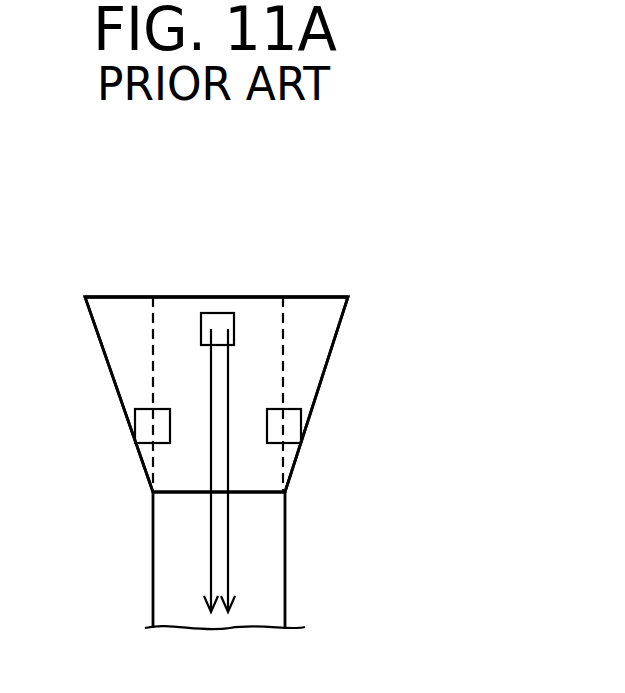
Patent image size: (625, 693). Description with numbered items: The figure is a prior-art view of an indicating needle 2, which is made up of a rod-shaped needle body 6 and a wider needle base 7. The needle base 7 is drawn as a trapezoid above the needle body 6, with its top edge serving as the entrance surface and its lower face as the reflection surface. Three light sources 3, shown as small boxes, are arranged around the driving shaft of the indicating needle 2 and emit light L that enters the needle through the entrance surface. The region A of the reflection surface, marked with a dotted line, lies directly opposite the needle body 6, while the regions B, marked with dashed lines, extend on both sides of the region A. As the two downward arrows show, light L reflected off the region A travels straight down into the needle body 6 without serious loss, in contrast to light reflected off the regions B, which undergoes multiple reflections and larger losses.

The indicating needle 2 is at (393, 408).
The light source 3 is at (215, 320).
The needle body 6 is at (272, 596).
The needle base 7 is at (318, 327).
The region of the reflection surface A is at (252, 297).
The regions of the reflection surface B is at (118, 297).
The light L is at (228, 541).